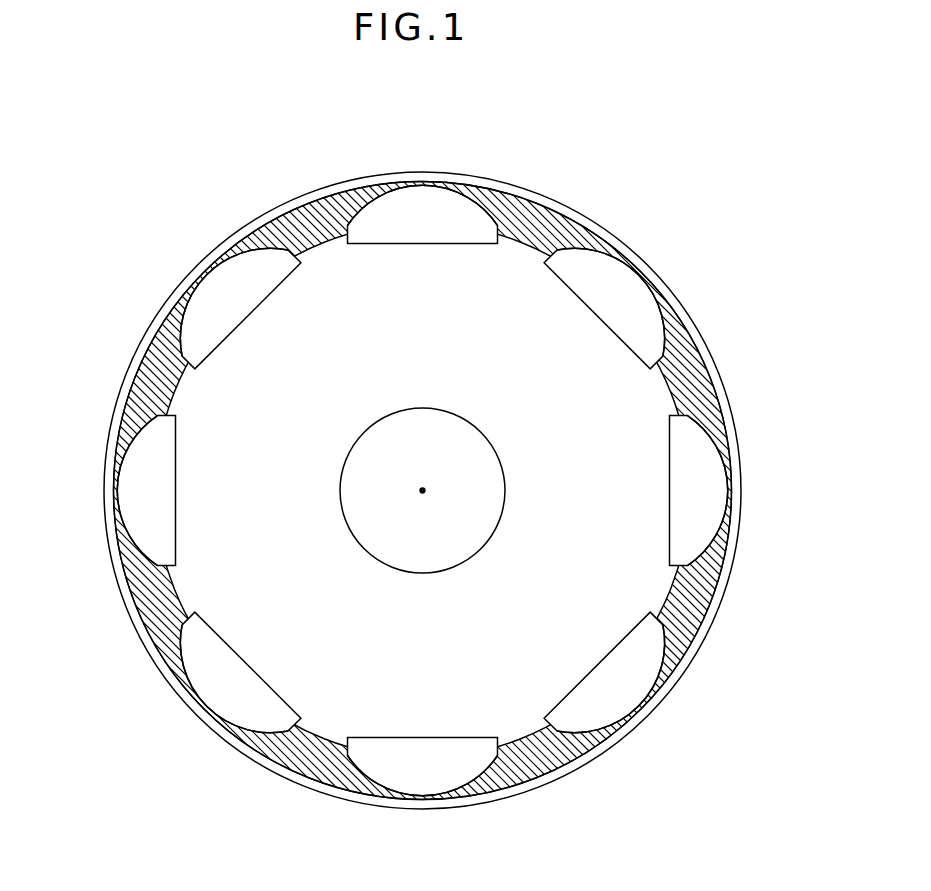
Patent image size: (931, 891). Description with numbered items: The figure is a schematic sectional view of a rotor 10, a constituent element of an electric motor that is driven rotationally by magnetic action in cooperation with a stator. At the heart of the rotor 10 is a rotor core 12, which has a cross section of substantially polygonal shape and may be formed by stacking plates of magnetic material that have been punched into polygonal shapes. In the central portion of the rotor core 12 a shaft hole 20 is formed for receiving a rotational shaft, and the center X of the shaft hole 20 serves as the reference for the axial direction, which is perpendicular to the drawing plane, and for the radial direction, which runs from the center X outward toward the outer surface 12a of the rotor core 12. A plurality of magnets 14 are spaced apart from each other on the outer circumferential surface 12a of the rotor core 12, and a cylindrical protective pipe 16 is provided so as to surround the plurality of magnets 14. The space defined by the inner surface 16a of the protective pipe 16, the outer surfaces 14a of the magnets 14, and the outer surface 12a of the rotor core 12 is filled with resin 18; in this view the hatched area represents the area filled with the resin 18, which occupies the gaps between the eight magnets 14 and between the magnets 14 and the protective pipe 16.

The rotor 10 is at (52, 163).
The rotor core 12 is at (457, 490).
The outer circumferential surface of the rotor core 12a is at (667, 387).
The magnets 14 is at (434, 200).
The outer surfaces of the magnets 14a is at (372, 192).
The protective pipe 16 is at (293, 196).
The inner surface of the protective pipe 16a is at (535, 766).
The resin 18 is at (457, 466).
The shaft hole 20 is at (456, 414).
The center of the shaft hole X is at (422, 490).